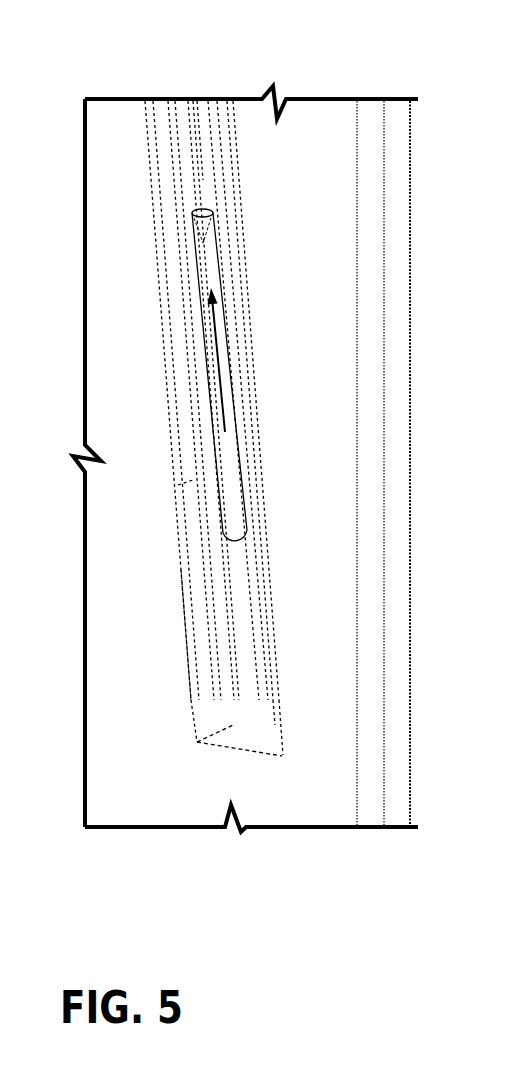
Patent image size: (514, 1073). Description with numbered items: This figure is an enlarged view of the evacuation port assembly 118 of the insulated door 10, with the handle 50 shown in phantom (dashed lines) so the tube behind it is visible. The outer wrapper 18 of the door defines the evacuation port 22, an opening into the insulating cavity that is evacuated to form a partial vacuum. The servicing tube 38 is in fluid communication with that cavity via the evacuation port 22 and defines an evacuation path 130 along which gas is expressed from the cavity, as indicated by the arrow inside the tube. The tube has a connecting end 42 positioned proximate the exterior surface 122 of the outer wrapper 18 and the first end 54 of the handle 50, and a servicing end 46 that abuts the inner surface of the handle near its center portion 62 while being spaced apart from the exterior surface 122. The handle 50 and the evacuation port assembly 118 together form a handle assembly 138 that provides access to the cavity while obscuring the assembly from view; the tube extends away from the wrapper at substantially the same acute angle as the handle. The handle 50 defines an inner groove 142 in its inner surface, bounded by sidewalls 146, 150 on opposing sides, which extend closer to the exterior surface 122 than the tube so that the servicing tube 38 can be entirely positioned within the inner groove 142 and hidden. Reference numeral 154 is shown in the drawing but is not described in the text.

The insulated door 10 is at (370, 92).
The outer wrapper 18 is at (123, 130).
The evacuation port 22 is at (435, 463).
The servicing tube 38 is at (197, 275).
The connecting end 42 is at (241, 535).
The servicing end 46 is at (200, 228).
The handle 50 is at (193, 660).
The first end 54 is at (197, 742).
The center portion 62 is at (200, 105).
The evacuation port assembly 118 is at (250, 353).
The exterior surface 122 is at (148, 351).
The evacuation path 130 is at (205, 372).
The handle assembly 138 is at (130, 183).
The inner groove 142 is at (219, 559).
The sidewall 146 is at (178, 485).
The sidewall 150 is at (262, 437).
The cavity 154 is at (286, 523).